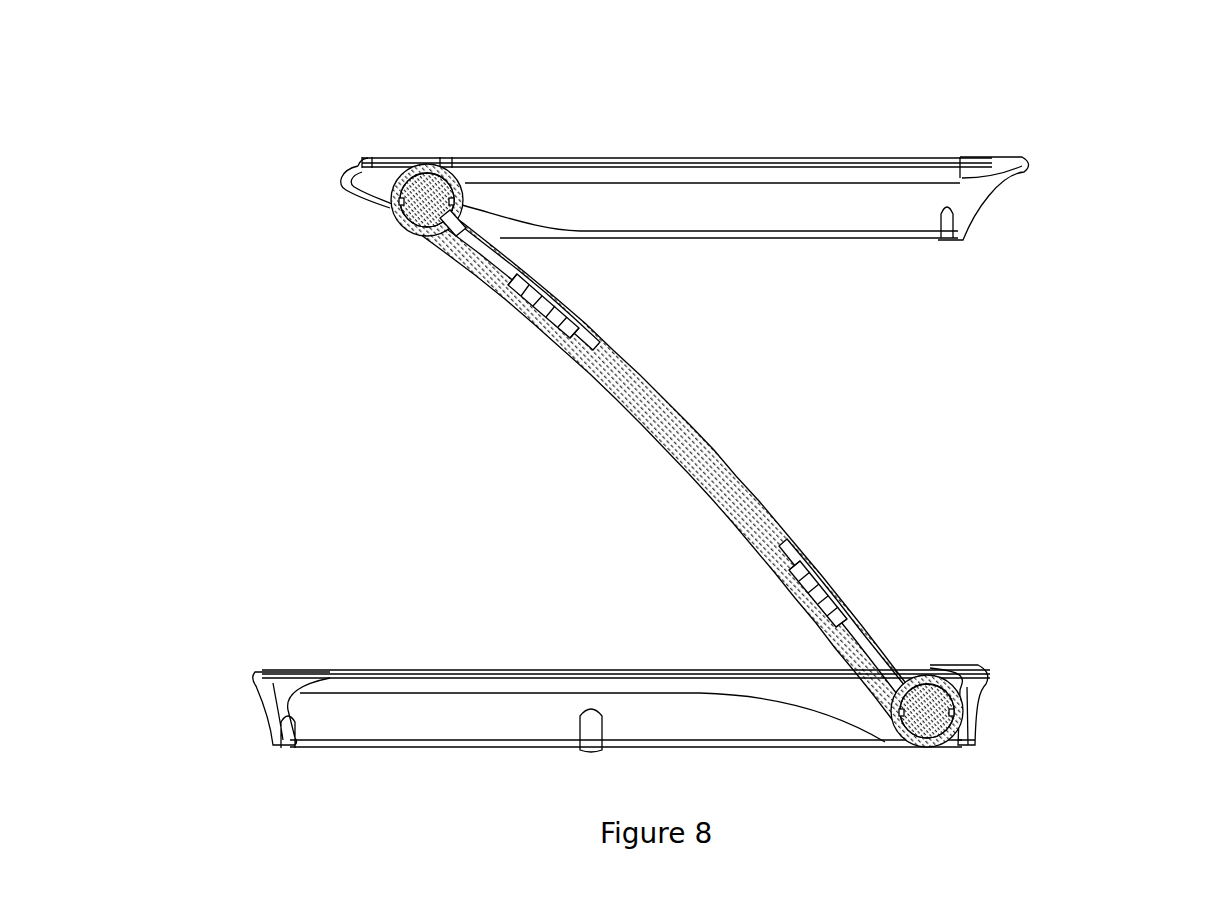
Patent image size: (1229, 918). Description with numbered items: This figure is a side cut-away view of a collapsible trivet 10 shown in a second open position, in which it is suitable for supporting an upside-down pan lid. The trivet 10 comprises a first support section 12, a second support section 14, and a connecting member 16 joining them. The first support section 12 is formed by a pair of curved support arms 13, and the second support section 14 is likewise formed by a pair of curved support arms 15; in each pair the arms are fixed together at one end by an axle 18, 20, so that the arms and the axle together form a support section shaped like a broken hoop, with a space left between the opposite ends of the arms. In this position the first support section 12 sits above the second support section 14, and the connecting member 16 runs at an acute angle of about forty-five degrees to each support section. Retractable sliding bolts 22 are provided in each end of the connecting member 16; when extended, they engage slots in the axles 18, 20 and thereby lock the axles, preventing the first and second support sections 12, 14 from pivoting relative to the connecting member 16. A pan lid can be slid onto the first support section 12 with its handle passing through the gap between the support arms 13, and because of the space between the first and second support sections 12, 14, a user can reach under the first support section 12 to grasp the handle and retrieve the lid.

The collapsible trivet 10 is at (792, 114).
The first support section 12 is at (642, 192).
The support arms 13 is at (987, 158).
The second support section 14 is at (740, 717).
The support arms 15 is at (338, 670).
The connecting member 16 is at (688, 433).
The axle 18 is at (420, 198).
The axle 20 is at (938, 714).
The retractable sliding bolts 22 is at (448, 228).